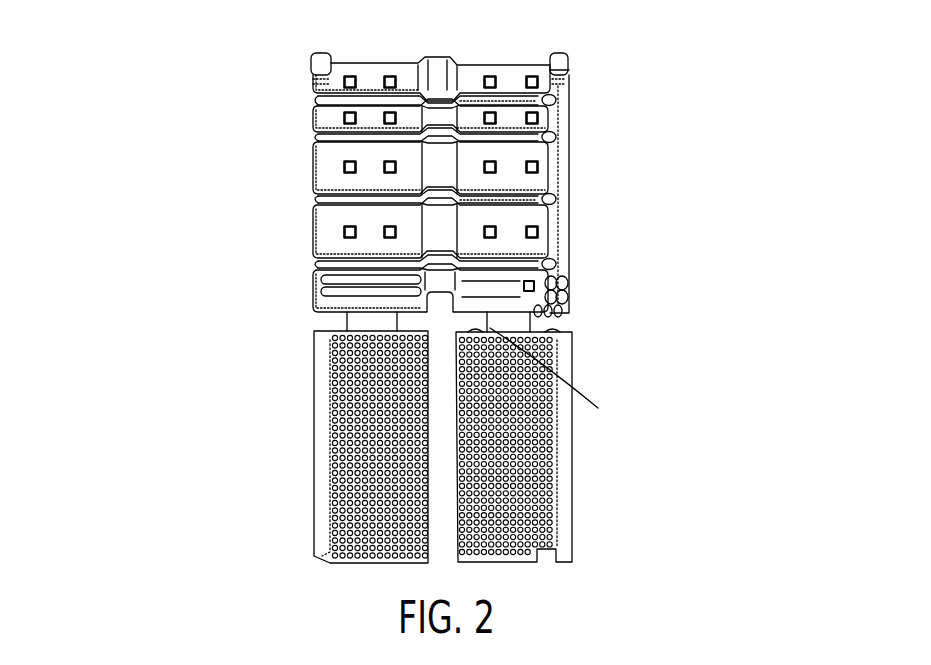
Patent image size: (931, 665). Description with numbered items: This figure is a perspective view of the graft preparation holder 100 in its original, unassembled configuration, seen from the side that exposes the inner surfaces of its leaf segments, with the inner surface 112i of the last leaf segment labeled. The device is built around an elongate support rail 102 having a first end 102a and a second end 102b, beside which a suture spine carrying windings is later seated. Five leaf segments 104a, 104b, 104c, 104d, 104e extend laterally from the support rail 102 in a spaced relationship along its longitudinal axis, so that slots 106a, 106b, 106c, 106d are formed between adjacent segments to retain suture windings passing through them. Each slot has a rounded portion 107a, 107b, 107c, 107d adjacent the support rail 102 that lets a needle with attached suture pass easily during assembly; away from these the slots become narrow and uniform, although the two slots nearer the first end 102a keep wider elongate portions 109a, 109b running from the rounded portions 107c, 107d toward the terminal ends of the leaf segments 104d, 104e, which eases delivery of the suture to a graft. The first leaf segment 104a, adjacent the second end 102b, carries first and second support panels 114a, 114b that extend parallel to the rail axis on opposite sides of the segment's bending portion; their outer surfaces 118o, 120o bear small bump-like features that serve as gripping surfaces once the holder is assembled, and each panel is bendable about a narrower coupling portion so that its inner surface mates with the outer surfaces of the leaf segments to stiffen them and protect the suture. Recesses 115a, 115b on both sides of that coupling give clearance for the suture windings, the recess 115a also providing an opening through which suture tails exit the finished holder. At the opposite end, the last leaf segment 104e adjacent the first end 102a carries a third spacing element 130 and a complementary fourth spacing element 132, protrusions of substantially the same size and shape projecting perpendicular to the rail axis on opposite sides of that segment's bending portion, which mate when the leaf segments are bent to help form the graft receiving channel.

The graft preparation holder 100 is at (150, 72).
The fourth spacing element 132 is at (320, 55).
The inner surface 112i is at (410, 73).
The third spacing element 130 is at (560, 66).
The first end 102a is at (590, 85).
The leaf segment 104e is at (318, 81).
The slot 106d is at (316, 100).
The leaf segment 104d is at (322, 118).
The slot 106c is at (322, 148).
The leaf segment 104c is at (322, 177).
The slot 106b is at (320, 210).
The leaf segment 104b is at (322, 238).
The slot 106a is at (318, 281).
The first leaf segment 104a is at (320, 301).
The rounded portion 107d is at (552, 98).
The wider elongate portion 109b is at (530, 102).
The rounded portion 107c is at (553, 137).
The wider elongate portion 109a is at (545, 200).
The rounded portion 107b is at (553, 200).
The support rail 102 is at (565, 244).
The rounded portion 107a is at (555, 264).
The second end 102b is at (560, 312).
The recess 115a is at (565, 333).
The recess 115b is at (562, 375).
The outer surface 118o is at (555, 463).
The first support panel 114a is at (562, 501).
The outer surface 120o is at (322, 455).
The second support panel 114b is at (325, 505).